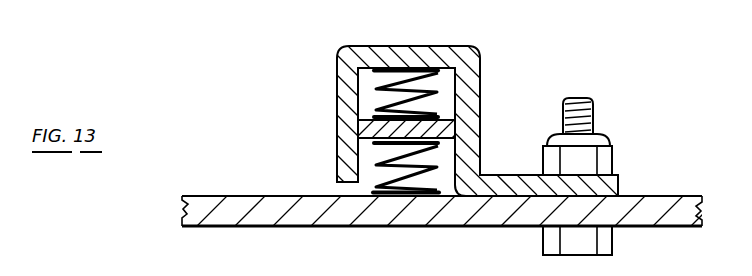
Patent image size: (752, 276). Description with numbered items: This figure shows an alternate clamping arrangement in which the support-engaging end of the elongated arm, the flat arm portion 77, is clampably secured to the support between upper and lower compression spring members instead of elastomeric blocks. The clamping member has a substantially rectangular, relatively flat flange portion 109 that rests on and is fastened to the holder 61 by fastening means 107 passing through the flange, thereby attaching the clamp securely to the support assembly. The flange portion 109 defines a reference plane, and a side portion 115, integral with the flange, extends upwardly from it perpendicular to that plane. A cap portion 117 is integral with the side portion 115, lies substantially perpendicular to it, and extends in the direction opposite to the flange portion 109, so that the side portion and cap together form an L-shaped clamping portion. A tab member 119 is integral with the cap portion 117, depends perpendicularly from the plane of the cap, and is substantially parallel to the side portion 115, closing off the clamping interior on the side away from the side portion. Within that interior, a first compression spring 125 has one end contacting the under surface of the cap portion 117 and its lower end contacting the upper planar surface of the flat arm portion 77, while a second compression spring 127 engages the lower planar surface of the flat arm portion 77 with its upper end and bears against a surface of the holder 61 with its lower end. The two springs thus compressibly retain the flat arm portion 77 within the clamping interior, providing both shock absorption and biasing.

The holder 61 is at (211, 196).
The flat arm portion 77 is at (372, 132).
The fastening means 107 is at (603, 157).
The flange portion 109 is at (512, 175).
The side portion 115 is at (481, 72).
The cap portion 117 is at (395, 46).
The tab member 119 is at (337, 70).
The first compression spring 125 is at (375, 93).
The second compression spring 127 is at (375, 165).